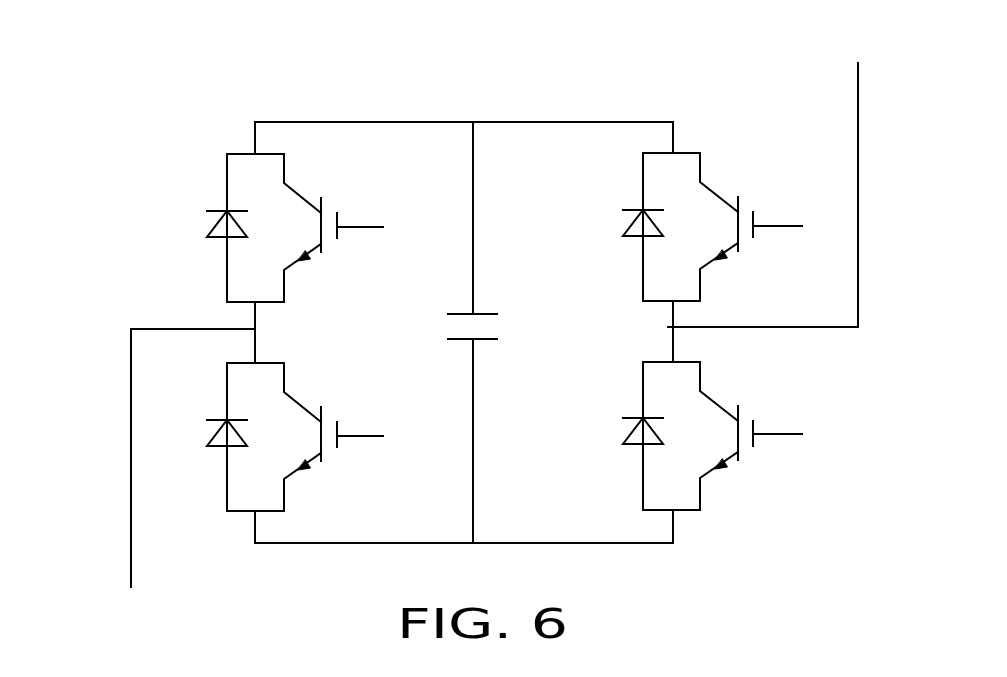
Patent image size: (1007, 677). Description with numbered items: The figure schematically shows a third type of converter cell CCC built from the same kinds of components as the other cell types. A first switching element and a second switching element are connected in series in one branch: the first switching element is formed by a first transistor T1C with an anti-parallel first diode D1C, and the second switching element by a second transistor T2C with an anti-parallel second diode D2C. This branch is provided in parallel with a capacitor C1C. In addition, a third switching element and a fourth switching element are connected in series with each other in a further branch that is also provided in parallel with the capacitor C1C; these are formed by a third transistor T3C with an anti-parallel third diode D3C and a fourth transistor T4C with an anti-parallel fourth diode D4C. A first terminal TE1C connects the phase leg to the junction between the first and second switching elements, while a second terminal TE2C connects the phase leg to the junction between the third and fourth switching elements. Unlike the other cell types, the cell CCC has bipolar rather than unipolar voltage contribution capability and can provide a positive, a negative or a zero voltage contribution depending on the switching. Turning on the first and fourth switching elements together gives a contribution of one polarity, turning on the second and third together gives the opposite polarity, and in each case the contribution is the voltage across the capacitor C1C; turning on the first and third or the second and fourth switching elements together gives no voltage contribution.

The converter cell CCC is at (164, 152).
The first diode D1C is at (192, 228).
The first transistor T1C is at (322, 228).
The second diode D2C is at (192, 437).
The second transistor T2C is at (322, 437).
The third diode D3C is at (610, 227).
The third transistor T3C is at (740, 227).
The fourth diode D4C is at (606, 436).
The fourth transistor T4C is at (740, 436).
The capacitor C1C is at (441, 332).
The first terminal TE1C is at (168, 478).
The second terminal TE2C is at (763, 184).